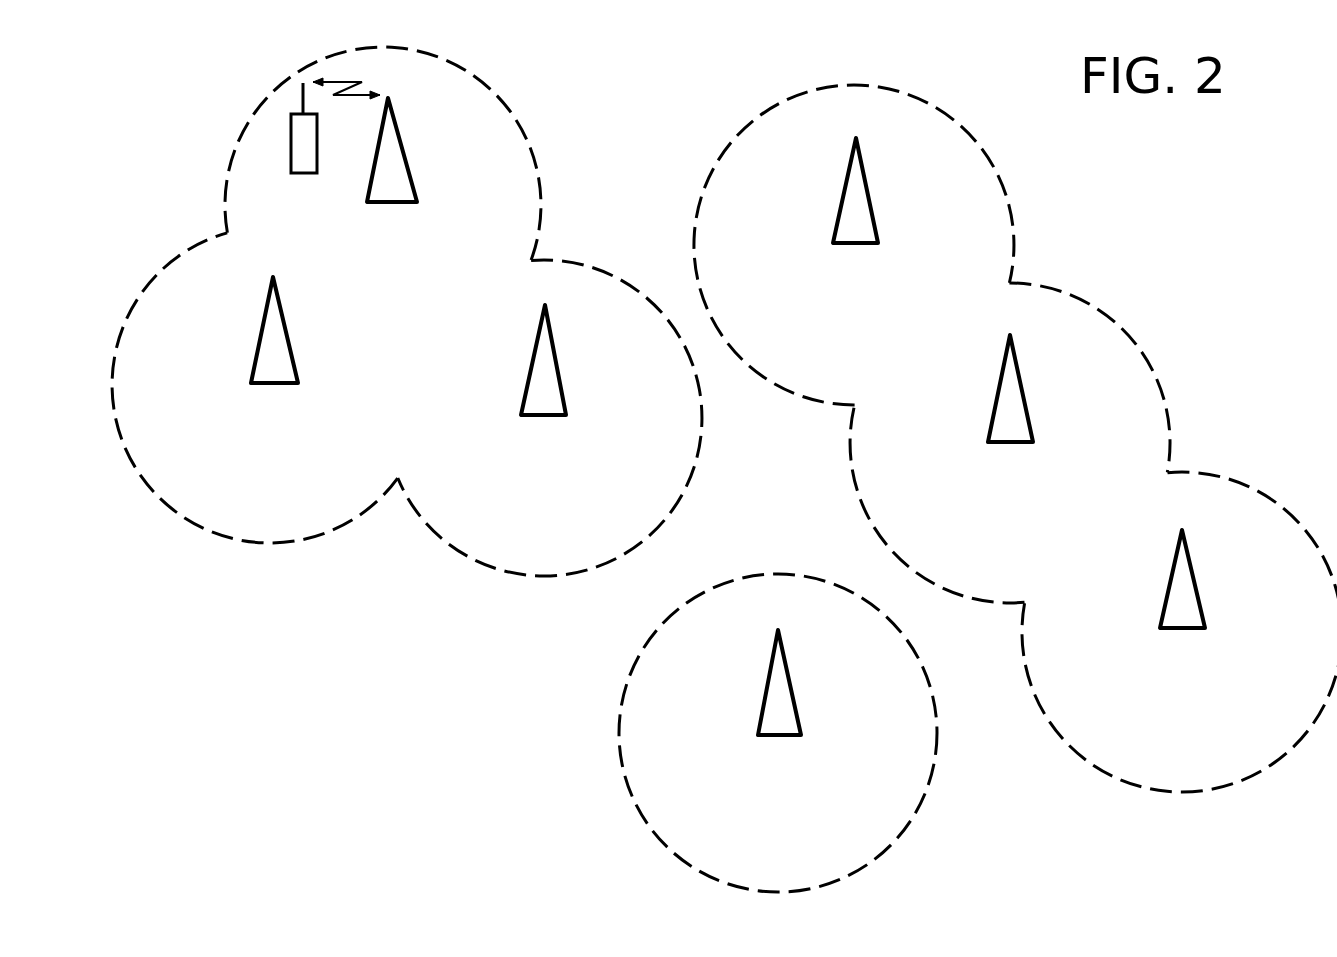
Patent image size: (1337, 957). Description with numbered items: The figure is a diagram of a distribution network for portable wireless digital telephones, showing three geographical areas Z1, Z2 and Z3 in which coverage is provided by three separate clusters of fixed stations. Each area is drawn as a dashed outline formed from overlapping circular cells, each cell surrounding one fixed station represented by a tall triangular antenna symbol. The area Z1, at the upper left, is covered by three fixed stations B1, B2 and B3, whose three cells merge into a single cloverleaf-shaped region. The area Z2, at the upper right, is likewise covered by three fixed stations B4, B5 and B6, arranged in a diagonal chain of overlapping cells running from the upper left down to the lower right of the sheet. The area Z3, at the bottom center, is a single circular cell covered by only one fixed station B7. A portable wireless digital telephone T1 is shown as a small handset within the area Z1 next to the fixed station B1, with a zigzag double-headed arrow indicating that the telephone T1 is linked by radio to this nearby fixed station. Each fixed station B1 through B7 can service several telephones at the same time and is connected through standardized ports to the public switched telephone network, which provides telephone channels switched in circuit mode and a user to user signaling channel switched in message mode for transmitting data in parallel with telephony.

The portable wireless digital telephone T1 is at (317, 131).
The fixed station B1 is at (400, 158).
The fixed station B2 is at (284, 346).
The fixed station B3 is at (550, 373).
The fixed station B4 is at (864, 214).
The fixed station B5 is at (1027, 411).
The fixed station B6 is at (1198, 604).
The fixed station B7 is at (789, 696).
The geographical area Z1 is at (541, 186).
The geographical area Z2 is at (1012, 215).
The geographical area Z3 is at (930, 676).